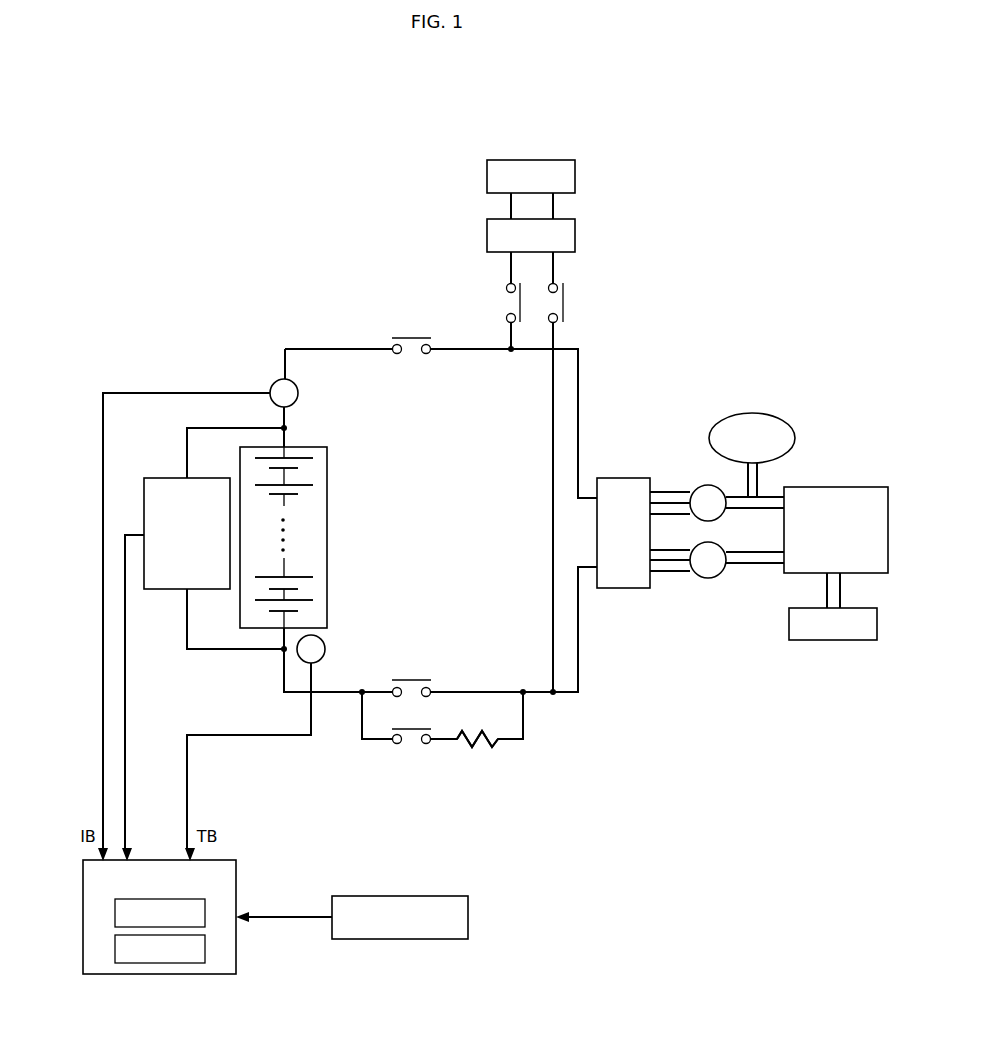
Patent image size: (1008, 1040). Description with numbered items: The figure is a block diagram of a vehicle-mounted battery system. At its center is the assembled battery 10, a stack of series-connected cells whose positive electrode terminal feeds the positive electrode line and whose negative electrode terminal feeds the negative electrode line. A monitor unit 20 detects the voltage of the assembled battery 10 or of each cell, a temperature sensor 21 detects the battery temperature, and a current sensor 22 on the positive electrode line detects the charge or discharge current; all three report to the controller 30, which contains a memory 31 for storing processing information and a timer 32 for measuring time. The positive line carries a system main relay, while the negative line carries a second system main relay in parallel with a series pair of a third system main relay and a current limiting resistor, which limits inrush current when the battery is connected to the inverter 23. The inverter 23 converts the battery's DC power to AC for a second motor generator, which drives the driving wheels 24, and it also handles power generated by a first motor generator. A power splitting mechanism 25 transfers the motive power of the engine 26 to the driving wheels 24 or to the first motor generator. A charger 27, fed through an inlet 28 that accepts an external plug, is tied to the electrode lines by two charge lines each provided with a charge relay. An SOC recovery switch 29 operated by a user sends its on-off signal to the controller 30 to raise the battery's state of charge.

The assembled battery 10 is at (328, 530).
The monitor unit 20 is at (161, 478).
The temperature sensor 21 is at (326, 649).
The current sensor 22 is at (273, 384).
The inverter 23 is at (622, 588).
The driving wheels 24 is at (752, 413).
The power splitting mechanism 25 is at (838, 487).
The engine 26 is at (830, 640).
The charger 27 is at (575, 236).
The inlet 28 is at (575, 175).
The SOC recovery switch 29 is at (400, 939).
The controller 30 is at (134, 946).
The memory 31 is at (115, 913).
The timer 32 is at (115, 949).